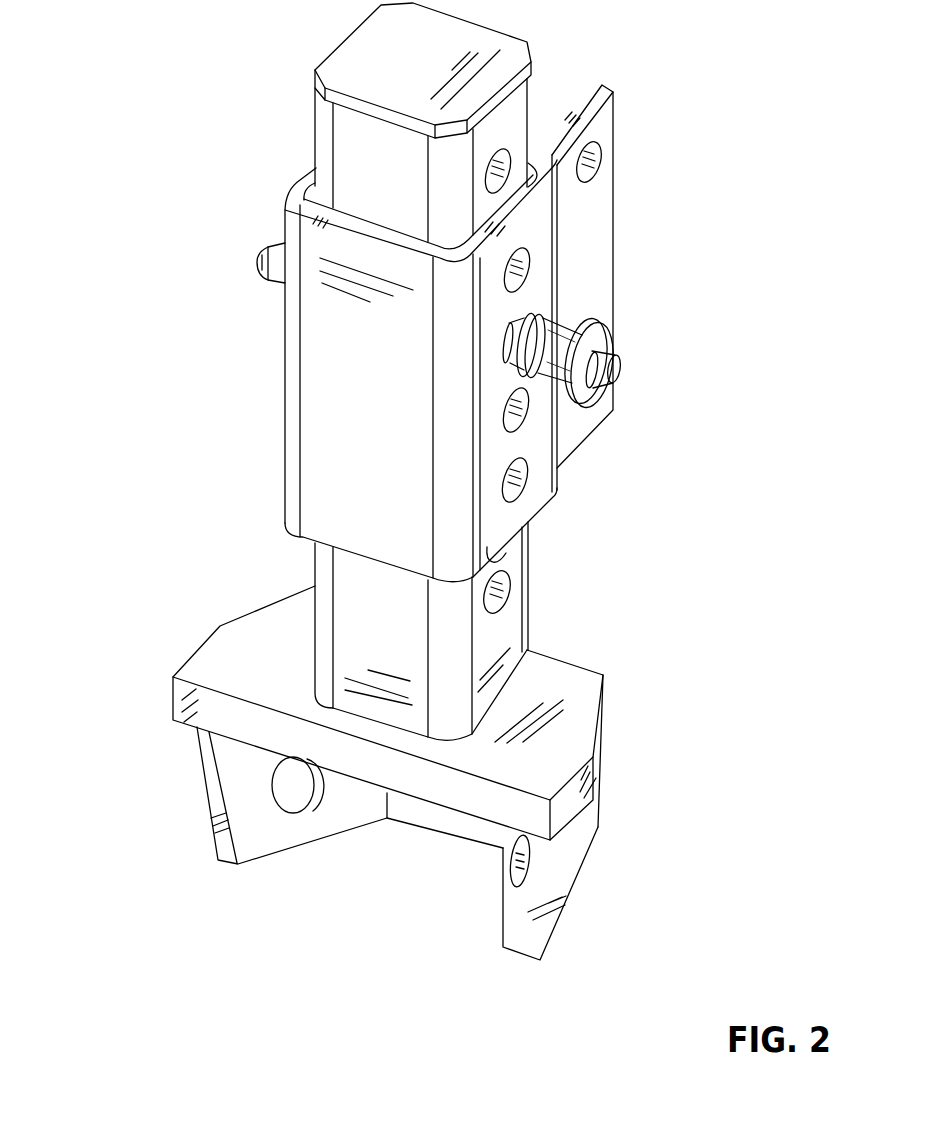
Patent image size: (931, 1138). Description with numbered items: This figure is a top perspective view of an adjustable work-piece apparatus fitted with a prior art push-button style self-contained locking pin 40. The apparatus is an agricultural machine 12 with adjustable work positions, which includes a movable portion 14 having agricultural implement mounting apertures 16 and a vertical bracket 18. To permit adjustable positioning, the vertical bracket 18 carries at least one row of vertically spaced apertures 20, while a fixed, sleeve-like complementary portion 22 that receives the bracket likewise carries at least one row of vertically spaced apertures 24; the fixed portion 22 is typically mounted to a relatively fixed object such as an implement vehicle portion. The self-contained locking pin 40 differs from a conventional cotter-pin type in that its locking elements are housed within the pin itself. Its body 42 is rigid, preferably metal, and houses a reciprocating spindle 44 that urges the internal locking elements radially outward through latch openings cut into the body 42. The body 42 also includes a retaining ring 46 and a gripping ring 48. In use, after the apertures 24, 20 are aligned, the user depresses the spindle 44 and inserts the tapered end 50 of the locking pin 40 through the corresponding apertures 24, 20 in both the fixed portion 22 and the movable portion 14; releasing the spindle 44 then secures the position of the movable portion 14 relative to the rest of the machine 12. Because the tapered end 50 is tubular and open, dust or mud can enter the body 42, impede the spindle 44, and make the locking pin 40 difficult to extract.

The agricultural machine 12 is at (243, 563).
The movable portion 14 is at (143, 683).
The agricultural implement mounting apertures 16 is at (313, 803).
The vertical bracket 18 is at (512, 632).
The vertically spaced apertures 20 is at (499, 156).
The fixed portion 22 is at (570, 506).
The vertically spaced apertures 24 is at (523, 252).
The self-contained locking pin 40 is at (640, 349).
The body of the locking pin 42 is at (569, 323).
The spindle 44 is at (618, 380).
The retaining ring 46 is at (541, 313).
The gripping ring 48 is at (597, 397).
The tapered end 50 is at (266, 247).